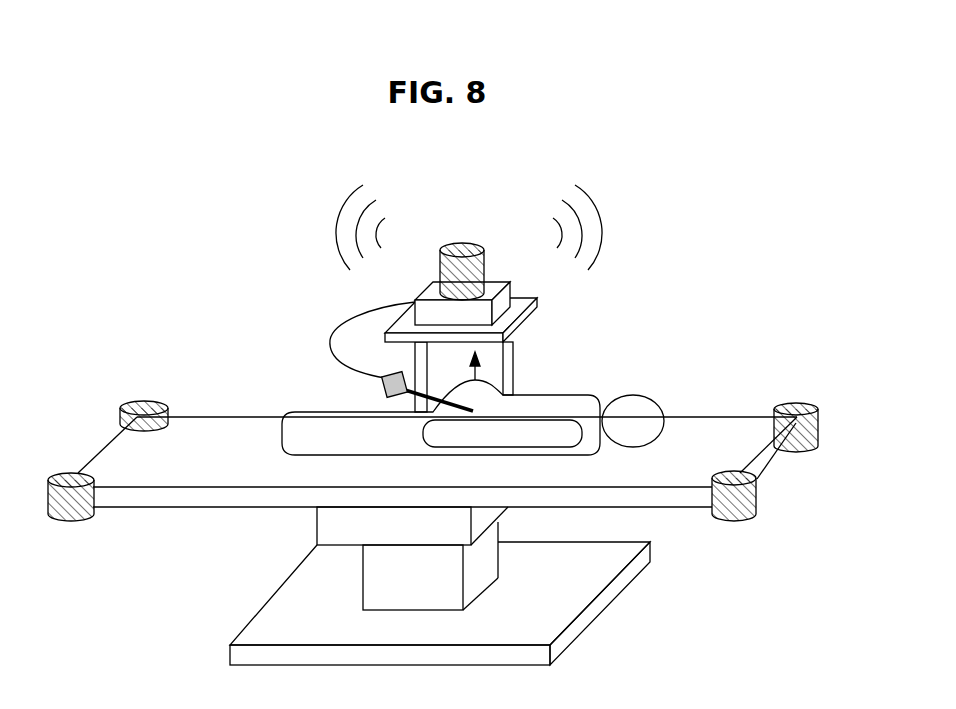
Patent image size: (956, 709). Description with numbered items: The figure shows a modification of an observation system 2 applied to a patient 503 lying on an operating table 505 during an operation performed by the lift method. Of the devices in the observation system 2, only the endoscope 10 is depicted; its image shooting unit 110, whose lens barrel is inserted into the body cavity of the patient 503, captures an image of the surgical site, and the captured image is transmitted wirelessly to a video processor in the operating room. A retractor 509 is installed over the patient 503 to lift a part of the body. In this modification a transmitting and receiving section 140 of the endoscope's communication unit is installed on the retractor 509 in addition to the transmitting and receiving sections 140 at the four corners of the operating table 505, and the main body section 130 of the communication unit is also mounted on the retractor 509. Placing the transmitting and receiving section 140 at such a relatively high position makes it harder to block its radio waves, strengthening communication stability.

The observation system 2 is at (101, 156).
The endoscope 10 is at (257, 247).
The image shooting unit 110 is at (381, 383).
The main body section 130 is at (415, 299).
The transmitting and receiving section 140 is at (468, 246).
The patient 503 is at (585, 395).
The operating table 505 is at (737, 415).
The retractor 509 is at (517, 312).